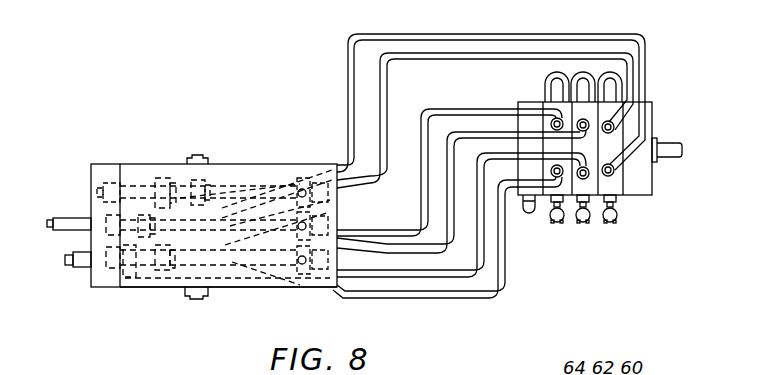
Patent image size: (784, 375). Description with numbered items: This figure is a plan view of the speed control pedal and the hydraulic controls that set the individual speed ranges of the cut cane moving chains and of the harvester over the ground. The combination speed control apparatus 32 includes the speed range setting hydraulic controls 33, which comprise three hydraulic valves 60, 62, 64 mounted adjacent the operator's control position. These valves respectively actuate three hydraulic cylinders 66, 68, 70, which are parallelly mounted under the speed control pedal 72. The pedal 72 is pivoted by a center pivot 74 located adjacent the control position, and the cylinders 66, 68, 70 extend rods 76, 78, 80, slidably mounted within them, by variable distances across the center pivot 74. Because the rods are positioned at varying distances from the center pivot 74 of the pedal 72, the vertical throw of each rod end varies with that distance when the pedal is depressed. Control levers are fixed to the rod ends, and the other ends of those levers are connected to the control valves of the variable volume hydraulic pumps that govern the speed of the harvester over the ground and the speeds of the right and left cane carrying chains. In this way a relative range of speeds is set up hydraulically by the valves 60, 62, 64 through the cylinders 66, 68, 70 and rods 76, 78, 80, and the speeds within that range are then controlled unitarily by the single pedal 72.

The combination speed control apparatus 32 is at (133, 164).
The speed range setting hydraulic controls 33 is at (652, 127).
The hydraulic valve 60 is at (617, 213).
The hydraulic valve 62 is at (589, 208).
The hydraulic valve 64 is at (566, 202).
The hydraulic cylinder 66 is at (296, 191).
The hydraulic cylinder 68 is at (312, 222).
The hydraulic cylinder 70 is at (248, 280).
The speed control pedal 72 is at (236, 290).
The center pivot 74 is at (193, 298).
The rod 76 is at (100, 190).
The rod 78 is at (53, 218).
The rod 80 is at (66, 258).